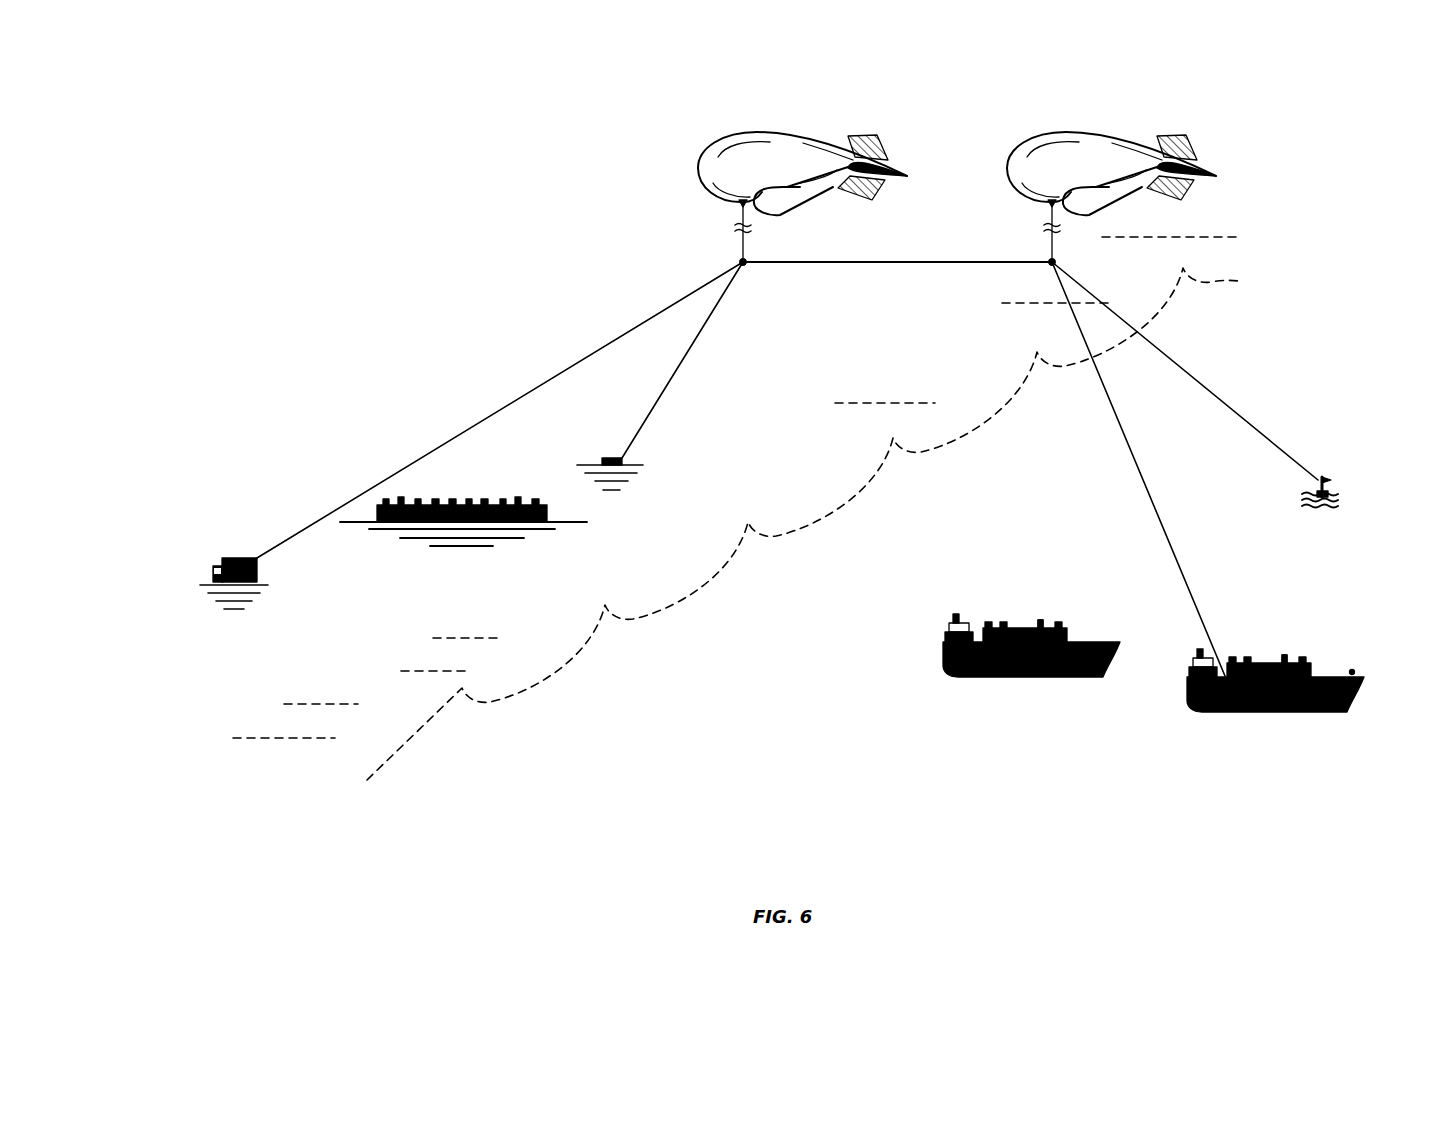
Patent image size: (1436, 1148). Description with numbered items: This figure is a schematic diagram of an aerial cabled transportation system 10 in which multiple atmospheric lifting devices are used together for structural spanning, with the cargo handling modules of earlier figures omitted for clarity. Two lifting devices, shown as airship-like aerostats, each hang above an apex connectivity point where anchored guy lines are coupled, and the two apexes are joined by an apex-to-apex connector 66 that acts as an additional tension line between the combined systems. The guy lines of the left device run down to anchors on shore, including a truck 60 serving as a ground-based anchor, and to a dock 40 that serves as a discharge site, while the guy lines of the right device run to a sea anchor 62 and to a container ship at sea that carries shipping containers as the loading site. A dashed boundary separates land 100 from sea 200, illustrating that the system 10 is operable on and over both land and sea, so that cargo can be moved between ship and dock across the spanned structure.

The aerial cabled transportation system 10 is at (529, 220).
The dock 40 is at (548, 520).
The truck 60 is at (213, 575).
The sea anchor 62 is at (1330, 484).
The apex-to-apex connector 66 is at (960, 262).
The land 100 is at (398, 733).
The sea 200 is at (453, 780).